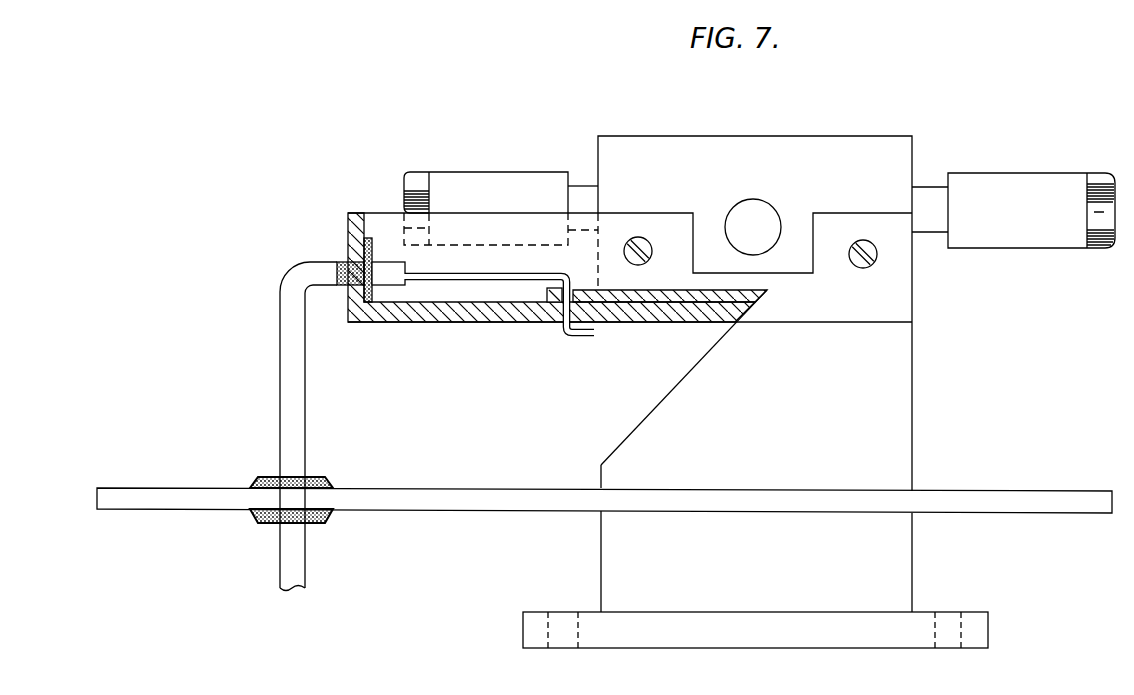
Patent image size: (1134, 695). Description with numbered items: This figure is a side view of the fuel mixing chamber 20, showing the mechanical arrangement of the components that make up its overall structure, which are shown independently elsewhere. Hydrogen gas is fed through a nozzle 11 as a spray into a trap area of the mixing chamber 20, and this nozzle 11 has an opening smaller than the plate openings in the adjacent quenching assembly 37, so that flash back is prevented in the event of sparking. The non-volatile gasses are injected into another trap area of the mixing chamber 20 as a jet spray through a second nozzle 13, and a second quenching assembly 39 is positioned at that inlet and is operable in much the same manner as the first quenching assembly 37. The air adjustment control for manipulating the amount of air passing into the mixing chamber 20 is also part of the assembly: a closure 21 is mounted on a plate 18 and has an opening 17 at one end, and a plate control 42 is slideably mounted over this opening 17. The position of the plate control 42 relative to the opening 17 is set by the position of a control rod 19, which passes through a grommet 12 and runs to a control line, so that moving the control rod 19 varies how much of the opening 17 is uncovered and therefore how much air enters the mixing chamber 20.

The nozzle 11 is at (399, 312).
The grommet 12 is at (338, 265).
The nozzle 13 is at (283, 384).
The opening 17 is at (627, 323).
The plate 18 is at (593, 615).
The control rod 19 is at (357, 223).
The mixing chamber 20 is at (900, 391).
The closure 21 is at (769, 148).
The quenching assembly 37 is at (515, 185).
The quenching assembly 39 is at (1002, 185).
The plate control 42 is at (692, 297).